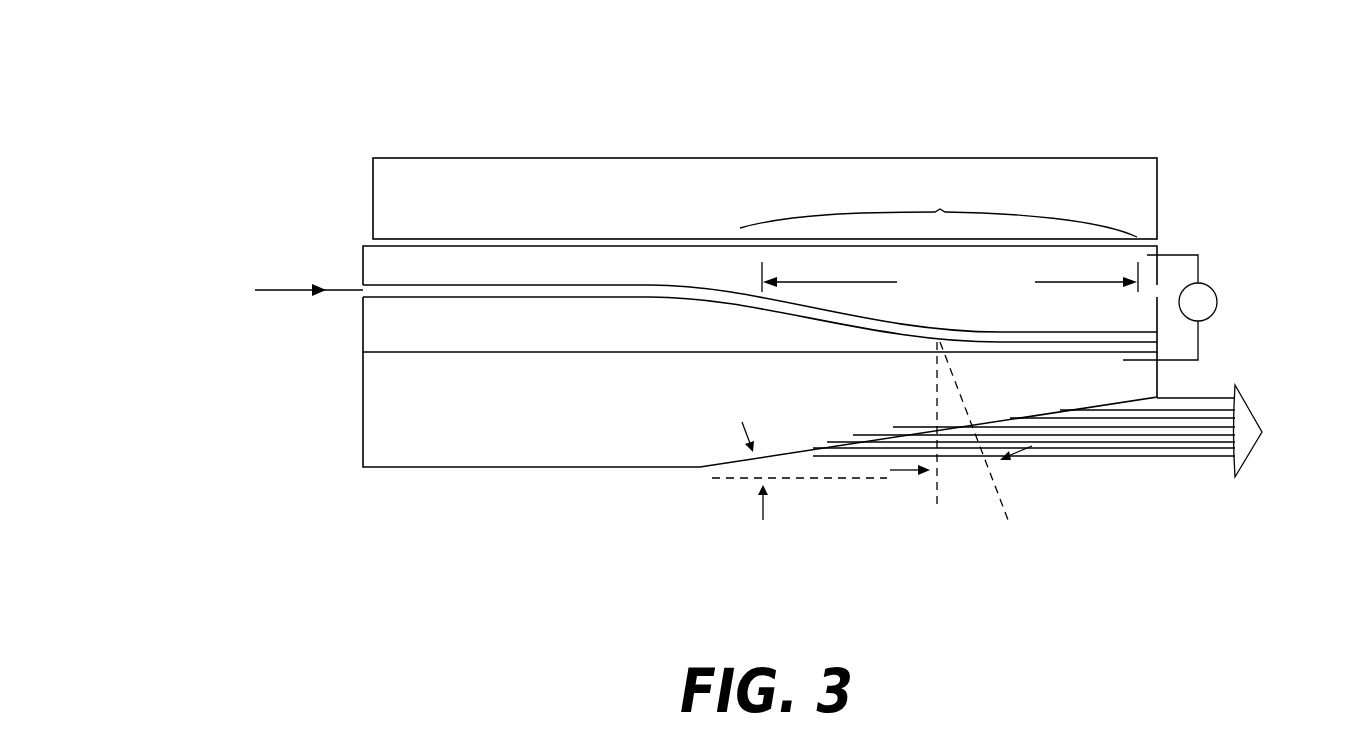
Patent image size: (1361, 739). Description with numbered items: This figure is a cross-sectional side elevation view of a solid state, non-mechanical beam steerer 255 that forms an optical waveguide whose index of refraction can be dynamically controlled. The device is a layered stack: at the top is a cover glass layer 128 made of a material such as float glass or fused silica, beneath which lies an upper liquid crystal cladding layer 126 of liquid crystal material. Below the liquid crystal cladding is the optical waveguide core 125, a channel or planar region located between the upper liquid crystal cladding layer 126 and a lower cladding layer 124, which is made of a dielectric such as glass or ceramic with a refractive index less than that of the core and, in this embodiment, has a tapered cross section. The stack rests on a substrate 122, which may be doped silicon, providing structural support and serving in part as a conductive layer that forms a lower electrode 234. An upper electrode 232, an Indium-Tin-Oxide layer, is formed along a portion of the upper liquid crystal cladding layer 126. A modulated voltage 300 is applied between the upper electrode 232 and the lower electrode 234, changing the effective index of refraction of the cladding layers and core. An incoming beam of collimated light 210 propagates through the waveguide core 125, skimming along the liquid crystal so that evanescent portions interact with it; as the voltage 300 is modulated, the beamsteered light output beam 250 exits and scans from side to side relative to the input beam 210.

The beam steerer 255 is at (428, 124).
The cover glass layer 128 is at (380, 183).
The upper electrode 232 is at (957, 177).
The upper liquid crystal cladding layer 126 is at (363, 272).
The optical waveguide core 125 is at (363, 287).
The lower cladding layer 124 is at (368, 320).
The substrate 122 is at (387, 438).
The beam of collimated light 210 is at (258, 290).
The modulated voltage 300 is at (1218, 297).
The lower electrode 234 is at (1100, 369).
The light output beam 250 is at (1210, 477).